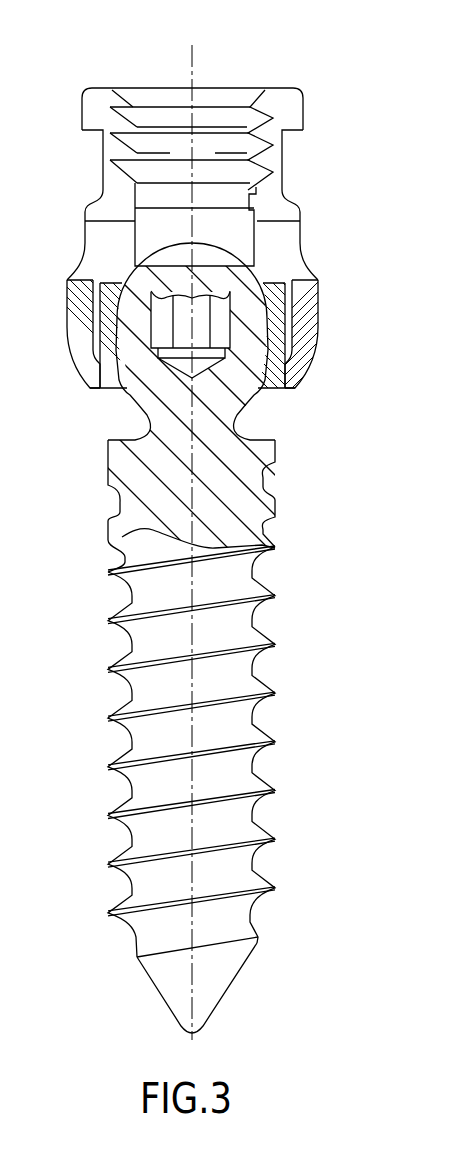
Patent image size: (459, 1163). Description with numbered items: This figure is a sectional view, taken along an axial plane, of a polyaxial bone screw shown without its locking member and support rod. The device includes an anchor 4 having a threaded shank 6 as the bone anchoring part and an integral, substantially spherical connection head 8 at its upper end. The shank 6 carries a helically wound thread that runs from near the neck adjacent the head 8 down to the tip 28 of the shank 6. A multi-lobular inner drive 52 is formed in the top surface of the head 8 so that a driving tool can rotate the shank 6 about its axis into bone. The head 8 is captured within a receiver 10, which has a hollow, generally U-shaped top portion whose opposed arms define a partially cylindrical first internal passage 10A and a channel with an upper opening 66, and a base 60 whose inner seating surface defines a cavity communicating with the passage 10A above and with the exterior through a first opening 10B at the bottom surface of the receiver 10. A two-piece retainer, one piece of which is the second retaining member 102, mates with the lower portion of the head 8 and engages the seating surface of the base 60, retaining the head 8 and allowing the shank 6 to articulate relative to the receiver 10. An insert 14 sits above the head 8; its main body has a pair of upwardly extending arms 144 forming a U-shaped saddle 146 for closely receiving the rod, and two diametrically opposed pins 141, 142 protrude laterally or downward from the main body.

The anchor 4 is at (87, 546).
The threaded shank 6 is at (242, 633).
The connection head 8 is at (238, 376).
The receiver 10 is at (307, 99).
The first internal passage 10A is at (212, 175).
The first opening 10B is at (92, 392).
The insert 14 is at (275, 267).
The tip 28 is at (180, 1005).
The inner drive 52 is at (203, 308).
The base 60 is at (305, 325).
The upper opening 66 is at (232, 92).
The second retaining member 102 is at (124, 390).
The pin 141 is at (290, 342).
The pin 142 is at (98, 341).
The upwardly extending arms 144 is at (281, 198).
The saddle 146 is at (152, 238).